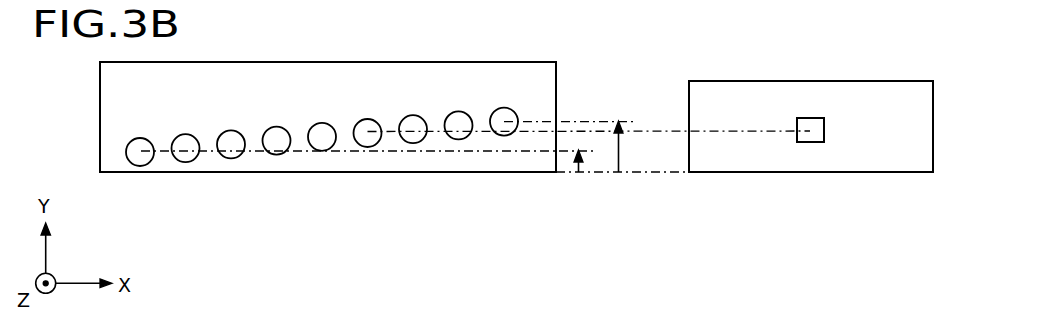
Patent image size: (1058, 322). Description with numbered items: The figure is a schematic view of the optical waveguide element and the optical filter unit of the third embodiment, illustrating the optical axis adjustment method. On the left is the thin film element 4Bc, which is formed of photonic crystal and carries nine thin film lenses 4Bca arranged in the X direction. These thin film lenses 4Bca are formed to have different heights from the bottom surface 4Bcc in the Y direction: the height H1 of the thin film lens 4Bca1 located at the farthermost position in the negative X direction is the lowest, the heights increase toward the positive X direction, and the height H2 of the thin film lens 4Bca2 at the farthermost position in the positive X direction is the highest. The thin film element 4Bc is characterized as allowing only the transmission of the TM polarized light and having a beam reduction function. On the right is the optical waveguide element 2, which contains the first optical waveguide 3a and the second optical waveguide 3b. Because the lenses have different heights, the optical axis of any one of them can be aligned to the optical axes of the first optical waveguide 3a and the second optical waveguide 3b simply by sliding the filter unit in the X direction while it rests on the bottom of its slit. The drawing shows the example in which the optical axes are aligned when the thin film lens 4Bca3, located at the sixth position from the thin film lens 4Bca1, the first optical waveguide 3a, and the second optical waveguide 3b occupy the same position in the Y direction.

The thin film element 4Bc is at (225, 62).
The thin film lenses 4Bca is at (329, 171).
The thin film lens 4Bca1 is at (140, 166).
The thin film lens 4Bca2 is at (504, 107).
The thin film lens 4Bca3 is at (368, 118).
The bottom surface 4Bcc is at (503, 173).
The height H1 is at (580, 174).
The height H2 is at (620, 173).
The optical waveguide element 2 is at (887, 81).
The first optical waveguide 3a is at (810, 118).
The second optical waveguide 3b is at (810, 130).